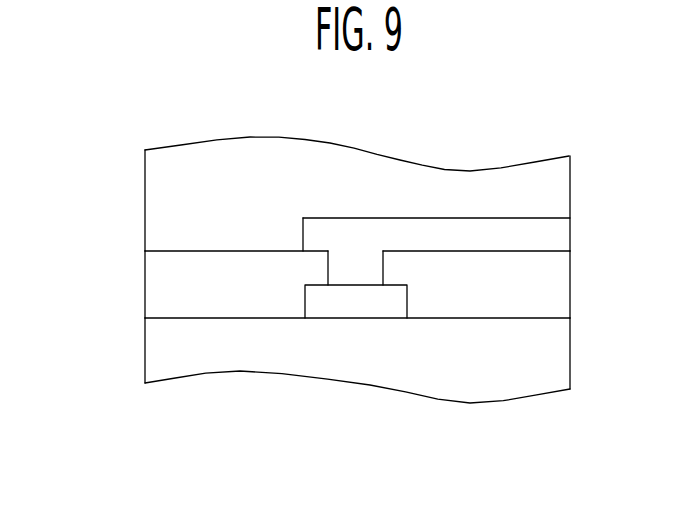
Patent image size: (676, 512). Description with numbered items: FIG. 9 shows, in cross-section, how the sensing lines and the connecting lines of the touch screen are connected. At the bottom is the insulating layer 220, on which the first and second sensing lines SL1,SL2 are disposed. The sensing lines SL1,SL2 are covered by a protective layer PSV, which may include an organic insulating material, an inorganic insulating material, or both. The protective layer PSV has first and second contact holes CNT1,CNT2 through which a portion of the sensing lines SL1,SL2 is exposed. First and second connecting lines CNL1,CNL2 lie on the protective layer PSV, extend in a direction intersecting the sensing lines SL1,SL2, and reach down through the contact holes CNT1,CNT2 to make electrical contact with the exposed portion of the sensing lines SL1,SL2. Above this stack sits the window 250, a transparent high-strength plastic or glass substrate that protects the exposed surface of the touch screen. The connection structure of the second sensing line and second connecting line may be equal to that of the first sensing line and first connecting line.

The window 250 is at (553, 192).
The protective layer PSV is at (552, 282).
The insulating layer 220 is at (552, 351).
The first and second contact holes CNT1,CNT2 is at (345, 187).
The first and second connecting lines CNL1,CNL2 is at (178, 234).
The first and second sensing lines SL1,SL2 is at (356, 360).